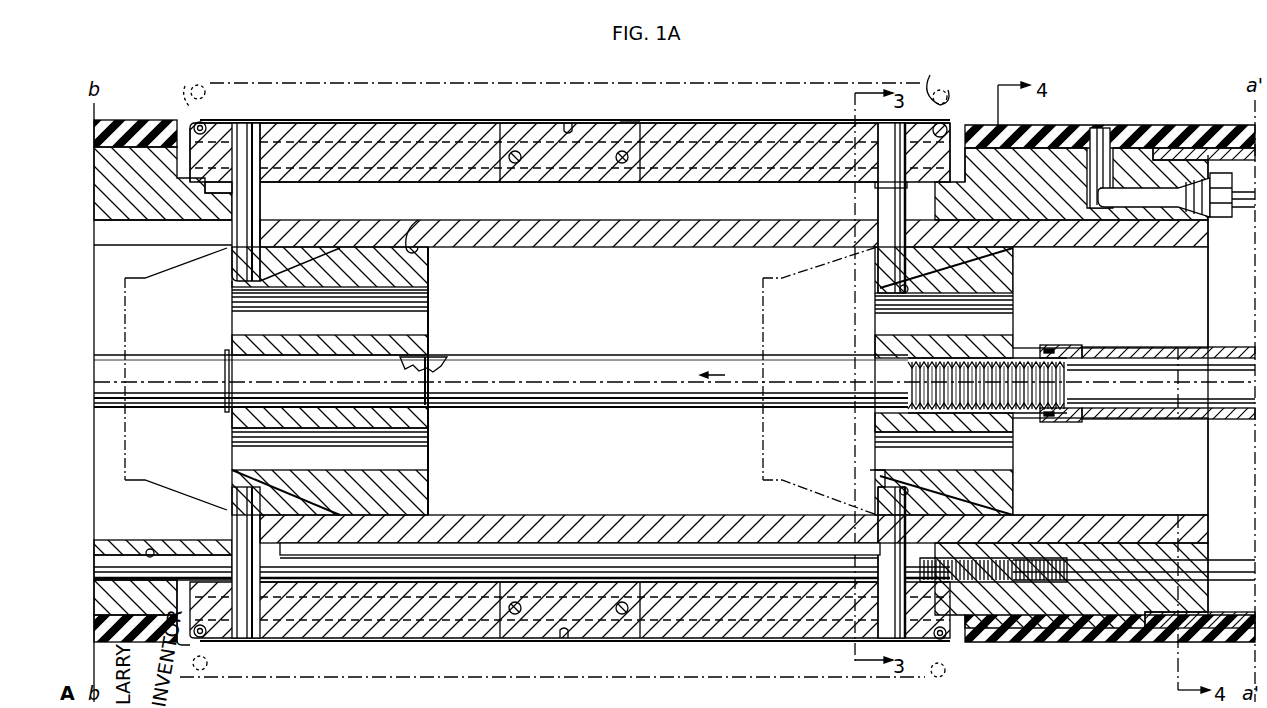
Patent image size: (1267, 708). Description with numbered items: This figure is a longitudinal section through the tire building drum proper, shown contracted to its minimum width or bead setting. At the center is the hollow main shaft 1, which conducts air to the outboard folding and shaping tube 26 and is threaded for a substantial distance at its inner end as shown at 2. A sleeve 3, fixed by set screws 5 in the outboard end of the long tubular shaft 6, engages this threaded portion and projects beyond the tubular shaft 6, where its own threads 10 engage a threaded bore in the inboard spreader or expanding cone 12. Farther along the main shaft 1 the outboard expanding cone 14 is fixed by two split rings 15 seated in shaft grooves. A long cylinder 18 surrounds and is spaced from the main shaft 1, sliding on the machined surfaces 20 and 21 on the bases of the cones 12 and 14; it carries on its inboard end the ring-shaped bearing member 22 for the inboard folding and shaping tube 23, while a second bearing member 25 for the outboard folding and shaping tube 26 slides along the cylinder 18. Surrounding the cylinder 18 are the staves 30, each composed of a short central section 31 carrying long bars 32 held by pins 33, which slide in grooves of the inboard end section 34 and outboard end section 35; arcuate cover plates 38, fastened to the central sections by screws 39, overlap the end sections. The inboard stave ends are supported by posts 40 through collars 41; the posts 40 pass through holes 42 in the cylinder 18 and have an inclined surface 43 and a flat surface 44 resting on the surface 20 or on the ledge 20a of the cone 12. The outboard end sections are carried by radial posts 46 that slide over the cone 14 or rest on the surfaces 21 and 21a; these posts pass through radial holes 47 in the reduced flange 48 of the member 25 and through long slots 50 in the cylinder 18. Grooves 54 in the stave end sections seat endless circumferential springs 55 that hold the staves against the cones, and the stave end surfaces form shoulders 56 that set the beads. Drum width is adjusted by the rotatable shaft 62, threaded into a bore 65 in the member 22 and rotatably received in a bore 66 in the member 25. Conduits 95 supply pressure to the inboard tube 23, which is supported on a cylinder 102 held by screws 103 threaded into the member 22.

The main shaft 1 is at (725, 400).
The threaded portion 2 is at (1070, 352).
The sleeve 3 is at (1046, 348).
The set screws 5 is at (1054, 350).
The tubular shaft 6 is at (1140, 348).
The threaded portion of sleeve 10 is at (1006, 344).
The inboard spreader or drum expanding cone 12 is at (1005, 286).
The outboard spreader or expanding cone 14 is at (420, 272).
The split rings 15 is at (226, 410).
The cylinder 18 is at (706, 248).
The machined surface 20 is at (1015, 265).
The ledge 20a is at (877, 283).
The machined surface 21 is at (416, 228).
The cylindrical surface 21a is at (232, 290).
The ring-shaped bearing member 22 is at (1134, 215).
The inboard folding and shaping tube 23 is at (1140, 128).
The second bearing member 25 is at (150, 200).
The outboard folding and shaping tube 26 is at (132, 128).
The stave 30 is at (755, 118).
The central section 31 is at (610, 184).
The bars 32 is at (735, 183).
The pins 33 is at (517, 151).
The inboard end section 34 is at (806, 143).
The outboard end section 35 is at (475, 121).
The cover plate 38 is at (628, 122).
The screws 39 is at (570, 128).
The post 40 is at (880, 205).
The collar 41 is at (906, 188).
The holes 42 is at (863, 240).
The inclined surface 43 is at (904, 286).
The flat surface 44 is at (870, 472).
The radial posts 46 is at (255, 233).
The radial holes 47 is at (234, 204).
The reduced flange 48 is at (258, 214).
The slots 50 is at (162, 235).
The grooves 54 is at (948, 128).
The endless circumferential springs 55 is at (208, 124).
The shoulders 56 is at (196, 85).
The rotatable shaft 62 is at (590, 560).
The threaded bore 65 is at (1068, 561).
The bore 66 is at (168, 548).
The conduits 95 is at (1240, 209).
The cylinder 102 is at (1230, 150).
The screws 103 is at (1205, 128).